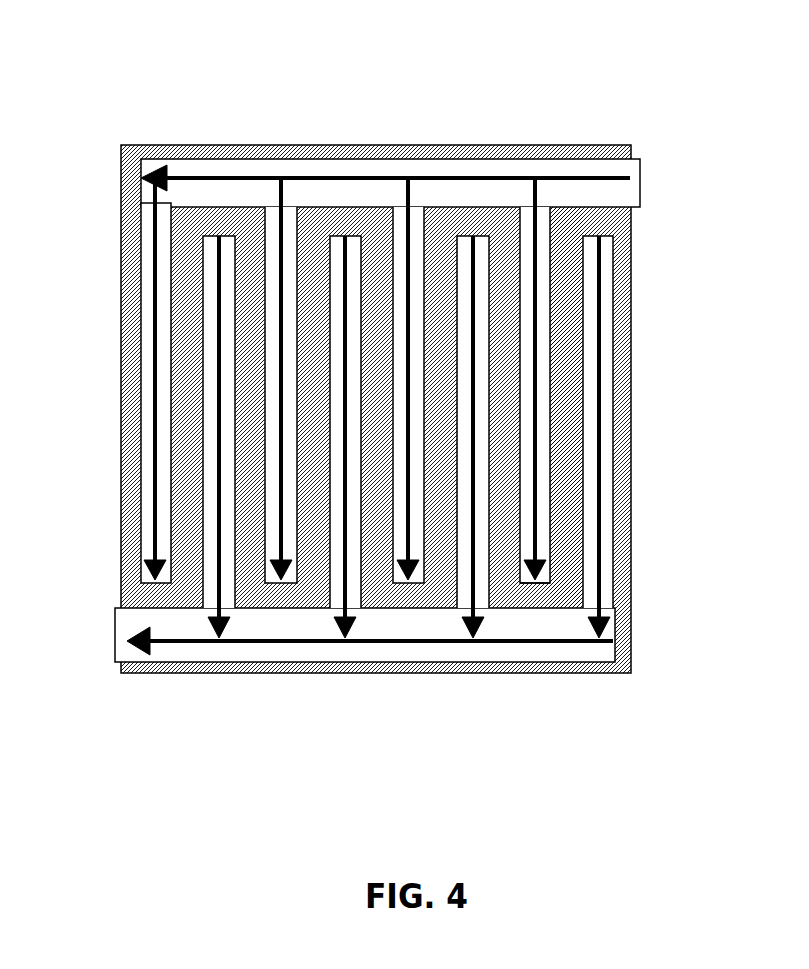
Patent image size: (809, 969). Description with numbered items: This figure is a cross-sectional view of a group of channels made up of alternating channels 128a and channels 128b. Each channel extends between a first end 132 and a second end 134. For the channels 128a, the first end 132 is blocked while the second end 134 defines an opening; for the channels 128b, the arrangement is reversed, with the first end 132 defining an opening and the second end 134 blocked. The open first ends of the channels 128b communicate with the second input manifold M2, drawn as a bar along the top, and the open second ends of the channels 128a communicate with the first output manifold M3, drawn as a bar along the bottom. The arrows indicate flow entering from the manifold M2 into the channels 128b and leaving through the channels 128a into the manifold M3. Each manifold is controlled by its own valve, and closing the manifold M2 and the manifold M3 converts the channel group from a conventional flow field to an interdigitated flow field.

The channels 128a is at (605, 312).
The channels 128b is at (527, 222).
The first end 132 is at (615, 230).
The second end 134 is at (532, 583).
The second input manifold M2 is at (440, 386).
The first output manifold M3 is at (126, 640).